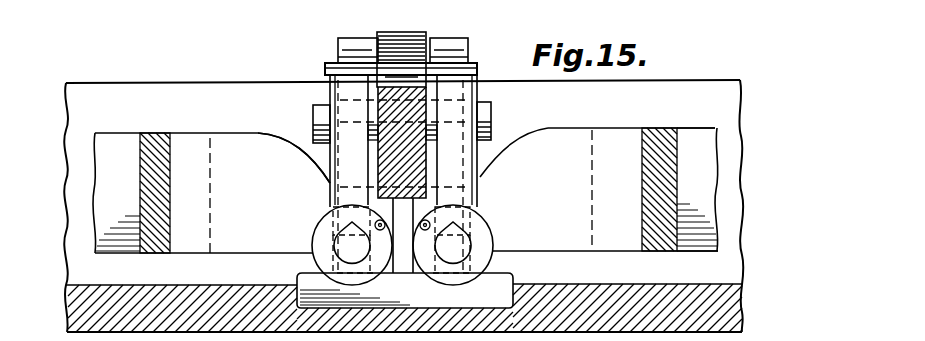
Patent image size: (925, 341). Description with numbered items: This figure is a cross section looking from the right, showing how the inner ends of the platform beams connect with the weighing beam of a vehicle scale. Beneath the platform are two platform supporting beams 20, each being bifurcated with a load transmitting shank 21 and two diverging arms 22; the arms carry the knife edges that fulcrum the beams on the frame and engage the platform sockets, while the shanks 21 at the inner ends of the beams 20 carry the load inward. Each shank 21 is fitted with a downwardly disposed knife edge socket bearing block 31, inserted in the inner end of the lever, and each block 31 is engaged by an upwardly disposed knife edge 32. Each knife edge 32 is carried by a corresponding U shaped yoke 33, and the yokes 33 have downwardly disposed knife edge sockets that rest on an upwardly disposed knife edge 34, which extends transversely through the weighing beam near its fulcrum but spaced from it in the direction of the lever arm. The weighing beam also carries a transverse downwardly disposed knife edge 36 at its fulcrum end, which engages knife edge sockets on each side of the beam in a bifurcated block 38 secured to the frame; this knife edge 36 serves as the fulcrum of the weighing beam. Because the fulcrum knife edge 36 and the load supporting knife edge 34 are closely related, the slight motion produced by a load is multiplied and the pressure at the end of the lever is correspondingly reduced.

The platform supporting beam 20 is at (197, 140).
The load transmitting shank 21 is at (254, 145).
The diverging arm 22 is at (700, 135).
The knife edge socket bearing block 31 is at (335, 210).
The knife edge 32 is at (345, 240).
The yoke 33 is at (330, 170).
The knife edge 34 is at (490, 110).
The knife edge 36 is at (470, 66).
The bifurcated block 38 is at (358, 38).